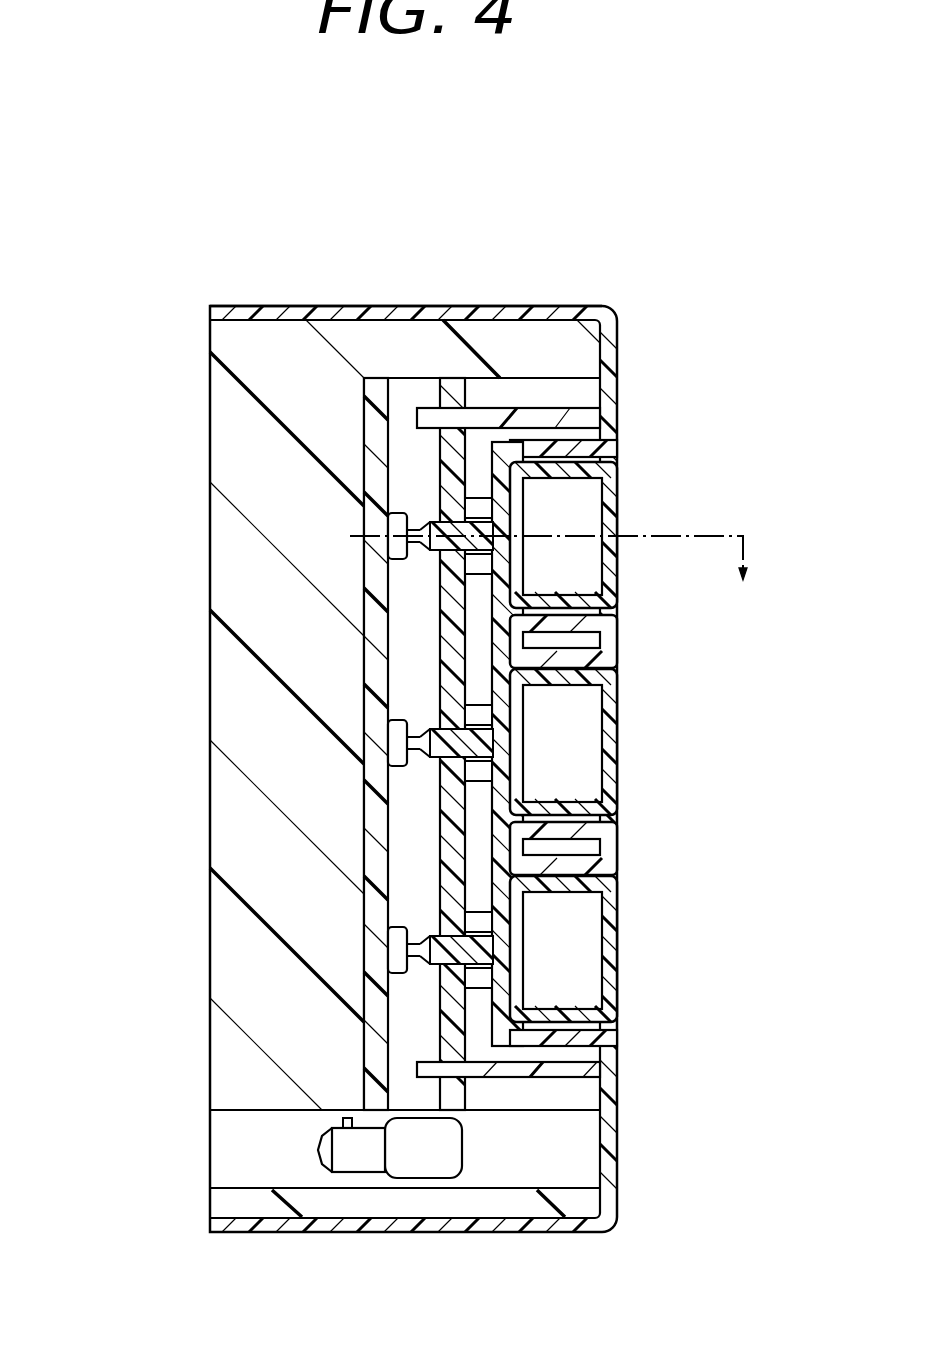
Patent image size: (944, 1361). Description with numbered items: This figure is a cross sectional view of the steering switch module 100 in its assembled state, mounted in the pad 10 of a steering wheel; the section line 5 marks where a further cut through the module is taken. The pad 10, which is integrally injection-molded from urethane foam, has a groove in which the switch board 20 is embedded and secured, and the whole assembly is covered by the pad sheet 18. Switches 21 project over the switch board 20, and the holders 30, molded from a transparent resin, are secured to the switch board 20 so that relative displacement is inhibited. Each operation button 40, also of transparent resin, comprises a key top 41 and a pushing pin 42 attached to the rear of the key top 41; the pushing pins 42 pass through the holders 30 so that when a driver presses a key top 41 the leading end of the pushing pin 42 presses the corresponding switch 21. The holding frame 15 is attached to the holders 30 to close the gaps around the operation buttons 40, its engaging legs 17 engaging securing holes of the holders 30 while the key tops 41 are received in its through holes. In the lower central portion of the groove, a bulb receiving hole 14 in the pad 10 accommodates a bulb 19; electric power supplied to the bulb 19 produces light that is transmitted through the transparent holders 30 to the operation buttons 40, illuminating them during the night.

The steering switch module 100 is at (422, 705).
The pad 10 is at (208, 392).
The bulb receiving hole 14 is at (250, 1172).
The holding frame 15 is at (612, 432).
The engaging leg 17 is at (533, 420).
The pad sheet 18 is at (320, 306).
The bulb 19 is at (423, 1162).
The switch board 20 is at (363, 722).
The switch 21 is at (400, 521).
The holder 30 is at (452, 378).
The operation button 40 is at (611, 741).
The key top 41 is at (612, 593).
The pushing pin 42 is at (437, 568).
The section line 5 is at (561, 560).